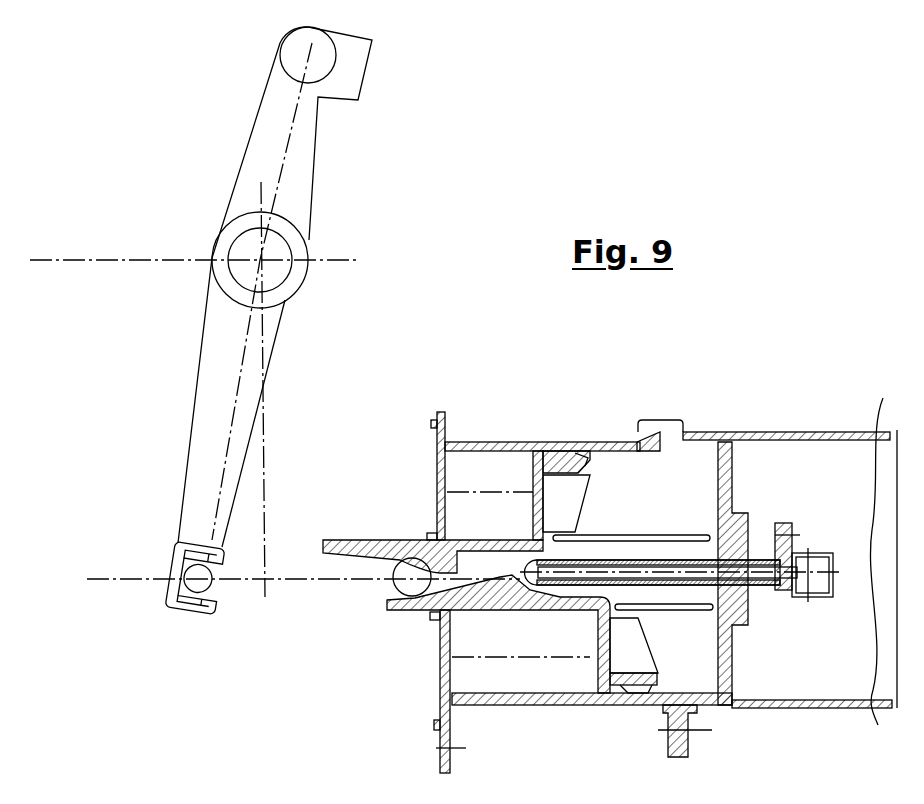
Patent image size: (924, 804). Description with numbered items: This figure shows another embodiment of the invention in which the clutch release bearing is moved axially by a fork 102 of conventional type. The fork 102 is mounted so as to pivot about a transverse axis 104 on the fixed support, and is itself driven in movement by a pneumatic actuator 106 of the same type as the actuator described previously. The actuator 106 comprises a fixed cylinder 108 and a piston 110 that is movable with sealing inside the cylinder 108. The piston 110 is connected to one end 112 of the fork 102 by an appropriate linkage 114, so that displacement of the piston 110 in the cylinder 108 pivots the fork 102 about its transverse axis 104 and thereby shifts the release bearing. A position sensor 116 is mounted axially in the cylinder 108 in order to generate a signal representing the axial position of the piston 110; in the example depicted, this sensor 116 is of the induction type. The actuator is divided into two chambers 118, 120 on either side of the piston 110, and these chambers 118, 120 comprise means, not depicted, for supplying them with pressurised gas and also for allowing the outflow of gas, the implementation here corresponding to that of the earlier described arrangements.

The fork 102 is at (253, 137).
The transverse axis 104 is at (232, 280).
The pneumatic actuator 106 is at (563, 420).
The fixed cylinder 108 is at (493, 442).
The piston 110 is at (537, 505).
The end of the fork 112 is at (172, 563).
The linkage 114 is at (310, 577).
The position sensor 116 is at (633, 560).
The chamber 118 is at (477, 667).
The chamber 120 is at (697, 667).